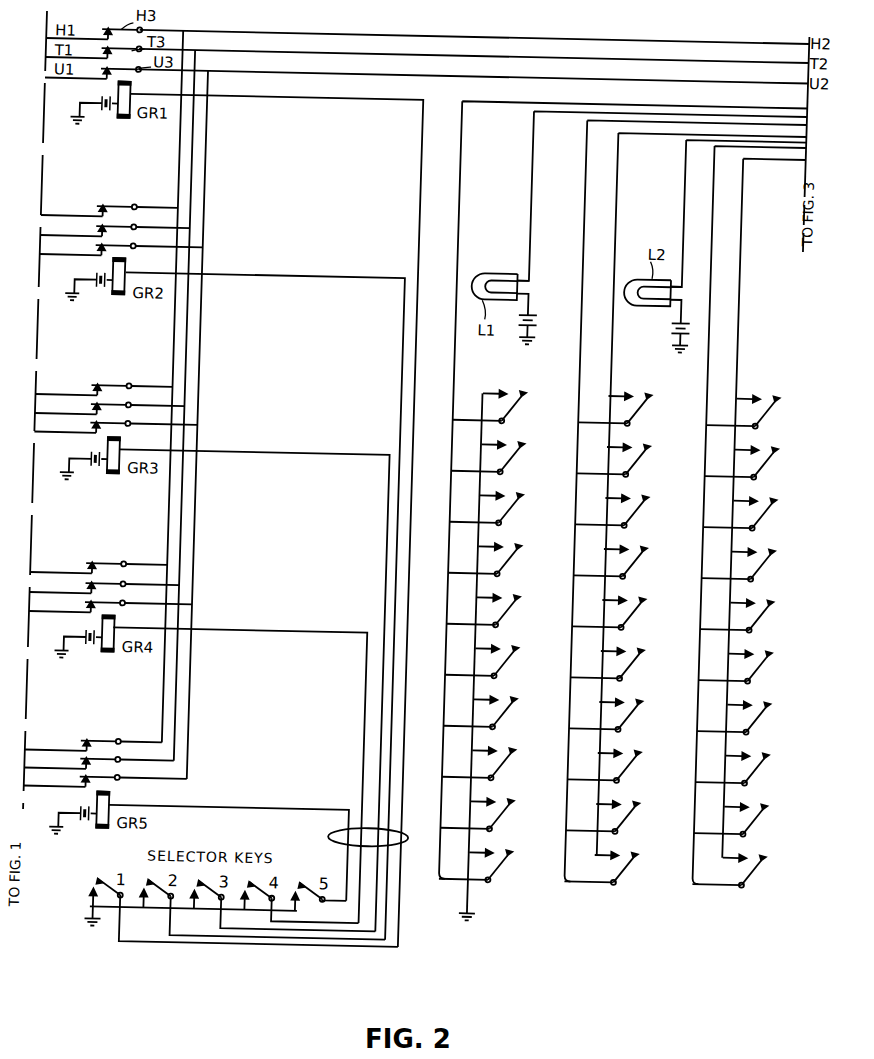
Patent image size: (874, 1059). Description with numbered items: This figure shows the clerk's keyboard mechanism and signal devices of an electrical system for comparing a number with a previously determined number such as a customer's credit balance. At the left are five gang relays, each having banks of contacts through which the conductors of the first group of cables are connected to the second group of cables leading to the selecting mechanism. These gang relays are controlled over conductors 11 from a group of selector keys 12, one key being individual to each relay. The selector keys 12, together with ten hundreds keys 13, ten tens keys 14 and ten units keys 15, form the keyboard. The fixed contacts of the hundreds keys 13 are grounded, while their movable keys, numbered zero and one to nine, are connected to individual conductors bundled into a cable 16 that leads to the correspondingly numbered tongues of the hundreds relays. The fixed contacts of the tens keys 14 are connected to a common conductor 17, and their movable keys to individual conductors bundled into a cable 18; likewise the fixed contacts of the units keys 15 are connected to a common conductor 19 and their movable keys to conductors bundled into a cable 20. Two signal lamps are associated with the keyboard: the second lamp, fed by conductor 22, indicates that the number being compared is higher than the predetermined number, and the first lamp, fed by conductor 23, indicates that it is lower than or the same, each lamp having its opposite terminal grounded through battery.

The conductors 11 is at (362, 828).
The selector keys 12 is at (258, 934).
The hundreds keys 13 is at (476, 660).
The tens keys 14 is at (607, 663).
The units keys 15 is at (736, 664).
The cable 16 is at (465, 229).
The common conductor 17 is at (623, 226).
The cable 18 is at (591, 257).
The common conductor 19 is at (749, 249).
The cable 20 is at (718, 268).
The conductor 22 is at (772, 127).
The conductor 23 is at (810, 101).